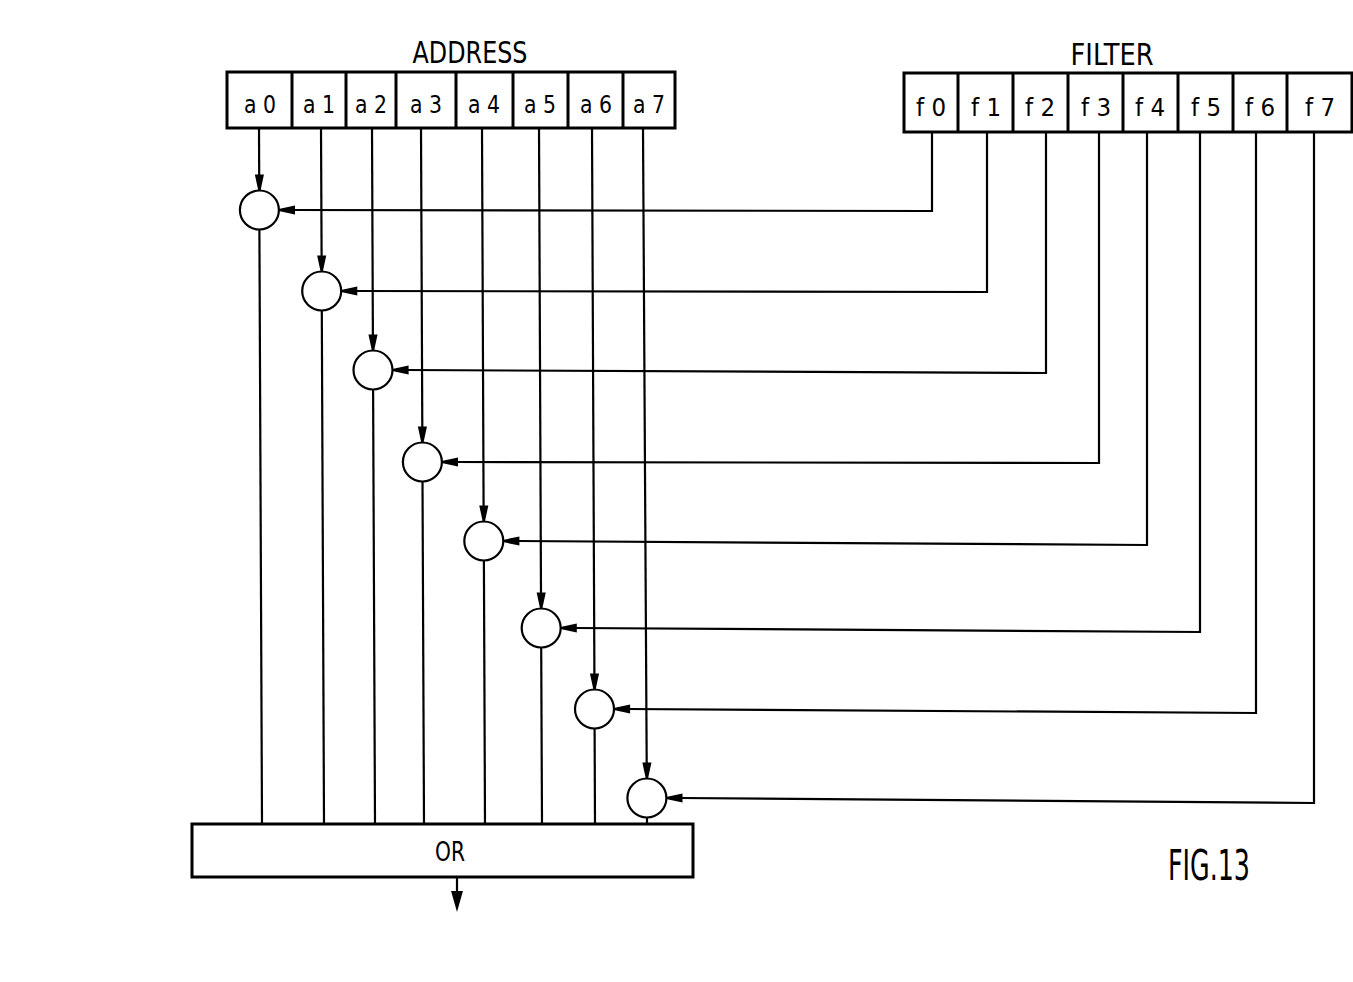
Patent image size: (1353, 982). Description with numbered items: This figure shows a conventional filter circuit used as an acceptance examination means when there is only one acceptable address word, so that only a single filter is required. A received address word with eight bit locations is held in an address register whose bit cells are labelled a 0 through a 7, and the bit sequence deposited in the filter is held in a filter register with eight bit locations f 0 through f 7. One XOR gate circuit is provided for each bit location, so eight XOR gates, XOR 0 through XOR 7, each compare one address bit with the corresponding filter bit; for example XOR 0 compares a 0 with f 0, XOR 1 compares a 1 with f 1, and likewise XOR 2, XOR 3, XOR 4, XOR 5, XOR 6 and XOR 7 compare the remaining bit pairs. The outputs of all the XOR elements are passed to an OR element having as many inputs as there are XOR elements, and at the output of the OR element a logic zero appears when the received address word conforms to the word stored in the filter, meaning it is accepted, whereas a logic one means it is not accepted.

The XOR gate 0 (address bit a0 / filter bit f0) 0 is at (535, 476).
The XOR gate 1 (address bit a1 / filter bit f1) 1 is at (562, 476).
The XOR gate 2 (address bit a2 / filter bit f2) 2 is at (592, 476).
The XOR gate 3 (address bit a3 / filter bit f3) 3 is at (618, 476).
The XOR gate 4 (address bit a4 / filter bit f4) 4 is at (642, 476).
The XOR gate 5 (address bit a5 / filter bit f5) 5 is at (669, 476).
The XOR gate 6 (address bit a6 / filter bit f6) 6 is at (697, 476).
The XOR gate 7 (address bit a7 / filter bit f7) 7 is at (726, 476).